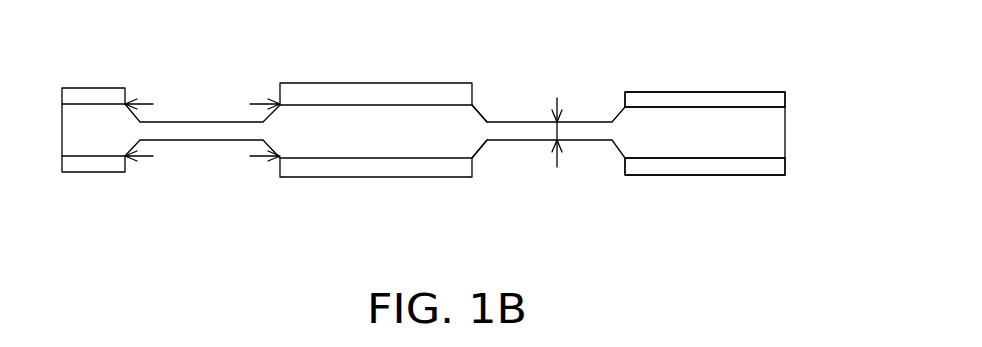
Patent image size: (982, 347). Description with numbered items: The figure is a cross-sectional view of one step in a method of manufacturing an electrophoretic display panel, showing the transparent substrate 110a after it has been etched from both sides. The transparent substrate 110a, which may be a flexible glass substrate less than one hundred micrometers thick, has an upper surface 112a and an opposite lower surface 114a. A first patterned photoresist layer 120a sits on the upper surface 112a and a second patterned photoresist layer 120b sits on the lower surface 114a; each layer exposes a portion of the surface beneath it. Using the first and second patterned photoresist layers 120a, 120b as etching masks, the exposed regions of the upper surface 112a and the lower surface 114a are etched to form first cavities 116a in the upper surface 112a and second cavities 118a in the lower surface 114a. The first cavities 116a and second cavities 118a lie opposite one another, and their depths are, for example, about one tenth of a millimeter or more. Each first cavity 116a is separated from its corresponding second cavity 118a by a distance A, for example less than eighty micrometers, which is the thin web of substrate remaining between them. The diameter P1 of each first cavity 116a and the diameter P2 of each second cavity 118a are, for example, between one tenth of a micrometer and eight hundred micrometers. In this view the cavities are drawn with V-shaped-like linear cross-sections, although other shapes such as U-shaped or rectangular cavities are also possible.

The transparent substrate 110a is at (775, 136).
The first patterned photoresist layer 120a is at (775, 101).
The second patterned photoresist layer 120b is at (775, 165).
The upper surface 112a is at (663, 105).
The lower surface 114a is at (663, 160).
The first cavities 116a is at (484, 110).
The second cavities 118a is at (484, 151).
The distance A is at (558, 128).
The diameter of first cavity P1 is at (202, 104).
The diameter of second cavity P2 is at (202, 161).